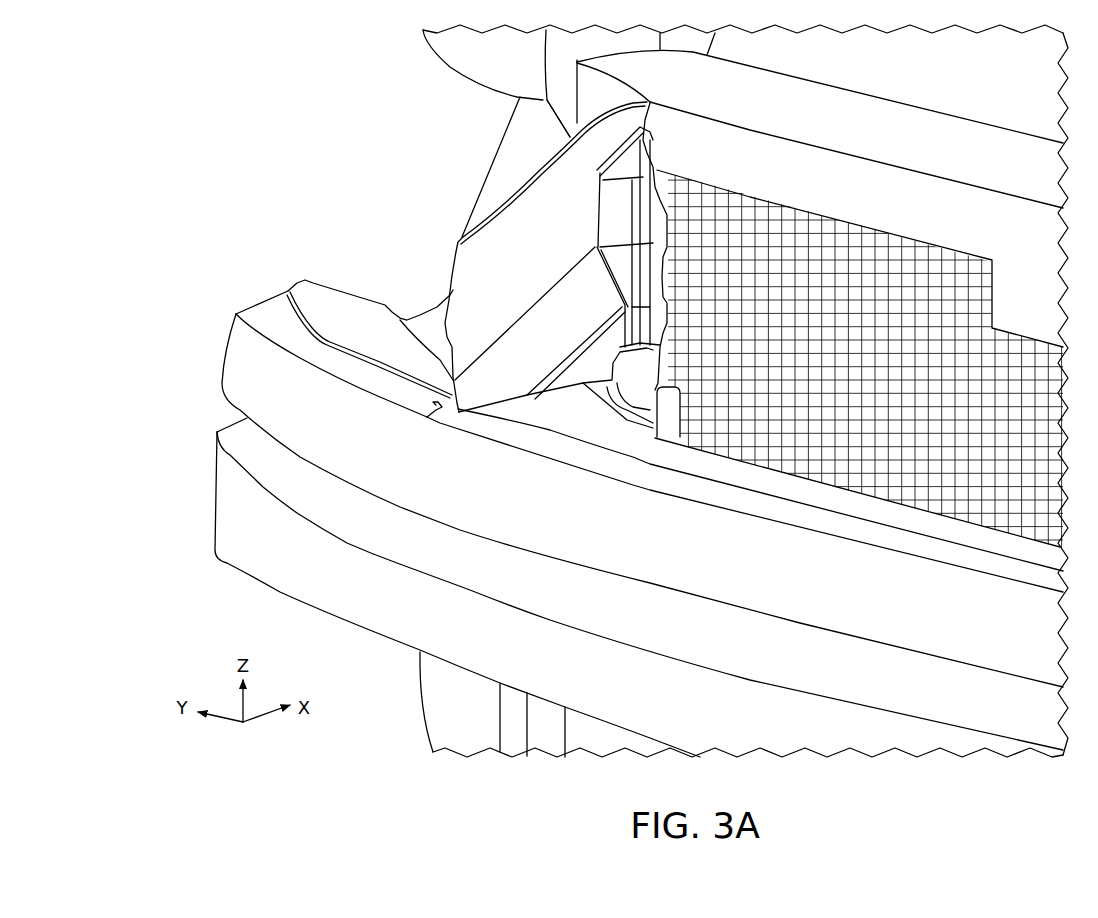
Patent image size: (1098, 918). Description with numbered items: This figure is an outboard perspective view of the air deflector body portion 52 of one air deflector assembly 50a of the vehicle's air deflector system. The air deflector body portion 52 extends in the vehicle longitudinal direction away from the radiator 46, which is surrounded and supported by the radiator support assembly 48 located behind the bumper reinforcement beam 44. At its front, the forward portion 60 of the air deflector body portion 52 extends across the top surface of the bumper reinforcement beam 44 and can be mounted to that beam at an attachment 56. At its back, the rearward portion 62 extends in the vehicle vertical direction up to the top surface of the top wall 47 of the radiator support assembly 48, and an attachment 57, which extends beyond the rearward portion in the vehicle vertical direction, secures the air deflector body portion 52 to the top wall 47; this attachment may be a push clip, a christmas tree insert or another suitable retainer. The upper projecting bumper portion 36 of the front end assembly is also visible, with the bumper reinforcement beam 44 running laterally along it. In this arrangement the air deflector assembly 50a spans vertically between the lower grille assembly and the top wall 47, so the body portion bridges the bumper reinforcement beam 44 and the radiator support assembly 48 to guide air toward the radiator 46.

The upper projecting bumper portion 36 is at (607, 705).
The bumper reinforcement beam 44 is at (543, 452).
The radiator 46 is at (895, 391).
The top wall 47 is at (768, 123).
The radiator support assembly 48 is at (913, 100).
The air deflector assembly 50a is at (440, 167).
The air deflector body portion 52 is at (453, 233).
The attachment 56 is at (436, 409).
The attachment 57 is at (627, 95).
The forward portion 60 is at (437, 325).
The rearward portion 62 is at (557, 137).